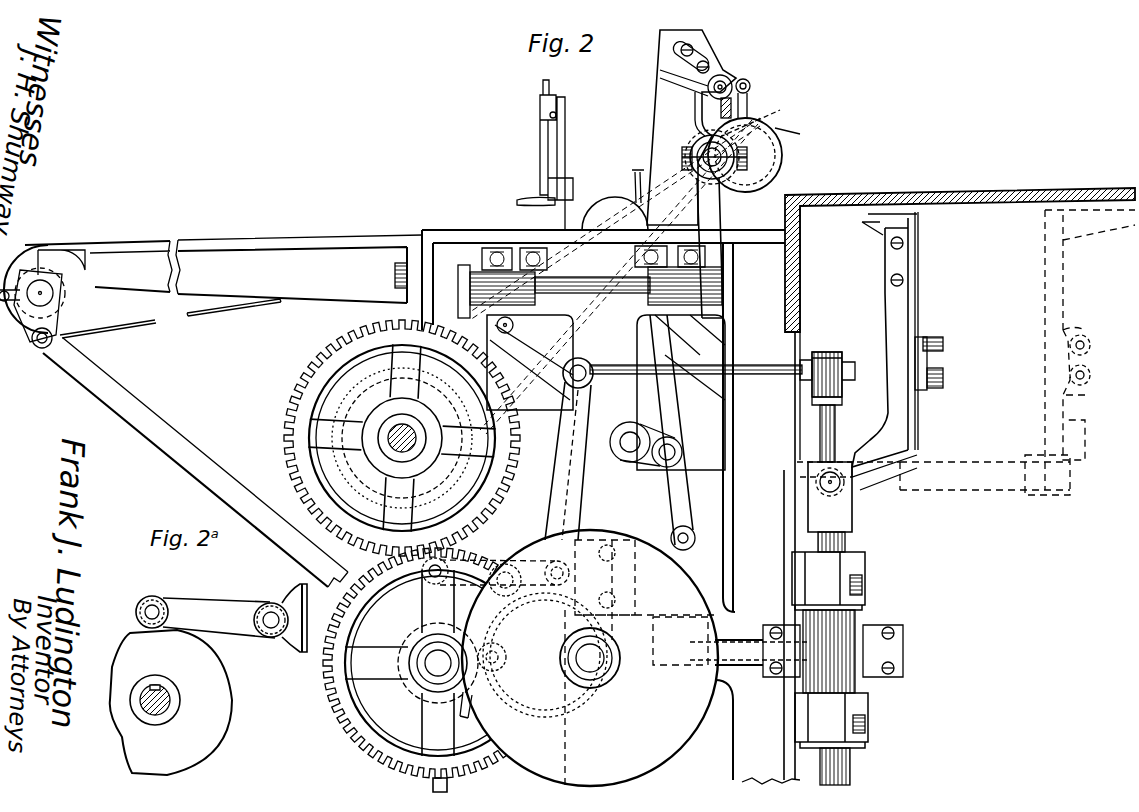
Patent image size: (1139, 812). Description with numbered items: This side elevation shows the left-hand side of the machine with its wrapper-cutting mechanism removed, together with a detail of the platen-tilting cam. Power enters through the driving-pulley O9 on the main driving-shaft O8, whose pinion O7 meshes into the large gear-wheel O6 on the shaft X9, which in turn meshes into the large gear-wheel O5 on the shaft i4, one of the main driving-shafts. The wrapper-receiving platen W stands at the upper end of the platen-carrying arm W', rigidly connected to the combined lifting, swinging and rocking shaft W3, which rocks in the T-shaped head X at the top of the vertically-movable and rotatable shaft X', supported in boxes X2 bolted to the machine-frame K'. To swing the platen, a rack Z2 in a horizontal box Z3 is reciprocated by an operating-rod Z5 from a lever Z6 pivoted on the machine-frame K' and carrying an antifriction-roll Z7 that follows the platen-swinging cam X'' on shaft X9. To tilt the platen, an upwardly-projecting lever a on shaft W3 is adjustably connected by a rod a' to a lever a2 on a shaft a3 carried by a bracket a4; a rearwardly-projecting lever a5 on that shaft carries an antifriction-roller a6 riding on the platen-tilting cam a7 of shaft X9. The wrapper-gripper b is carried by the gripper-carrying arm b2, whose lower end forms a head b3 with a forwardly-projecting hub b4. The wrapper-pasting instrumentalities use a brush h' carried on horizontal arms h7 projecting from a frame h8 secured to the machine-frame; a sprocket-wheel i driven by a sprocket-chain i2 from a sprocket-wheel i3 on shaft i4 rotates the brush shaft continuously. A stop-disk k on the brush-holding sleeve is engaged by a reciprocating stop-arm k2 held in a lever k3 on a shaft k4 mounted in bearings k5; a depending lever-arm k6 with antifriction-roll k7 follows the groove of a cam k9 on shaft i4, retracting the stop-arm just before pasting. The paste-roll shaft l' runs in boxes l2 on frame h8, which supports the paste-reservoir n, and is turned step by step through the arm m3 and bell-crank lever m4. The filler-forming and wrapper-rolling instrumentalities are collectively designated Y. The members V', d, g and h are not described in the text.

In FIG. 2, the paste-reservoir n is at (670, 36).
In FIG. 2, the bell-crank lever m4 is at (712, 66).
In FIG. 2, the boxes l2 is at (731, 79).
In FIG. 2, the shaft l' is at (755, 74).
In FIG. 2, the arm m3 is at (748, 104).
In FIG. 2, the frame h8 is at (684, 96).
In FIG. 2, the brush h' is at (717, 107).
In FIG. 2, the horizontal arms h7 is at (698, 137).
In FIG. 2, the stop-arm k2 is at (756, 117).
In FIG. 2, the stop-disk k is at (792, 124).
In FIG. 2, the sprocket-wheel i is at (782, 153).
In FIG. 2, the lever k3 is at (724, 214).
In FIG. 2, the filler-forming and wrapper-rolling instrumentalities Y is at (608, 198).
In FIG. 2, the frame V' is at (960, 315).
In FIG. 2, the wrapper-gripper b is at (920, 214).
In FIG. 2, the wrapper-receiving platen W is at (880, 334).
In FIG. 2, the gripper-carrying arm b2 is at (919, 248).
In FIG. 2, the bolt d is at (944, 345).
In FIG. 2, the head b3 is at (928, 362).
In FIG. 2, the platen-carrying arm W' is at (884, 391).
In FIG. 2, the hub b4 is at (944, 382).
In FIG. 2, the lever a is at (848, 414).
In FIG. 2, the rod a' is at (701, 361).
In FIG. 2, the shaft k4 is at (580, 278).
In FIG. 2, the bearings k5 is at (536, 304).
In FIG. 2, the sprocket-chain i2 is at (560, 365).
In FIG. 2, the cam k9 is at (355, 392).
In FIG. 2, the sprocket-wheel i3 is at (370, 395).
In FIG. 2, the lever-arm k6 is at (470, 380).
In FIG. 2, the shaft i4 is at (404, 432).
In FIG. 2, the antifriction-roll k7 is at (455, 468).
In FIG. 2, the large gear-wheel O5 is at (290, 412).
In FIG. 2, the lever a2 is at (586, 414).
In FIG. 2, the bracket a4 is at (605, 560).
In FIG. 2, the lever a5 is at (500, 565).
In FIG. 2A, the lever a5 is at (235, 618).
In FIG. 2, the antifriction-roller a6 is at (423, 570).
In FIG. 2A, the antifriction-roller a6 is at (152, 597).
In FIG. 2, the shaft a3 is at (570, 576).
In FIG. 2A, the shaft a3 is at (265, 612).
In FIG. 2, the platen-tilting cam a7 is at (434, 650).
In FIG. 2A, the platen-tilting cam a7 is at (171, 702).
In FIG. 2, the large gear-wheel O6 is at (335, 705).
In FIG. 2, the shaft X9 is at (438, 663).
In FIG. 2A, the shaft X9 is at (171, 700).
In FIG. 2, the platen-swinging cam X'' is at (466, 719).
In FIG. 2, the driving-pulley O9 is at (690, 748).
In FIG. 2, the pinion O7 is at (610, 700).
In FIG. 2, the main driving-shaft O8 is at (607, 660).
In FIG. 2, the lever Z6 is at (528, 702).
In FIG. 2, the operating-rod Z5 is at (540, 618).
In FIG. 2, the antifriction-roll Z7 is at (505, 662).
In FIG. 2, the machine-frame K' is at (774, 556).
In FIG. 2, the T-shaped head X is at (830, 497).
In FIG. 2, the shaft W3 is at (820, 486).
In FIG. 2, the shaft X' is at (853, 542).
In FIG. 2, the boxes X2 is at (840, 570).
In FIG. 2, the box Z3 is at (875, 626).
In FIG. 2, the bracket g is at (750, 651).
In FIG. 2, the bracket h is at (883, 651).
In FIG. 2, the rack Z2 is at (739, 652).